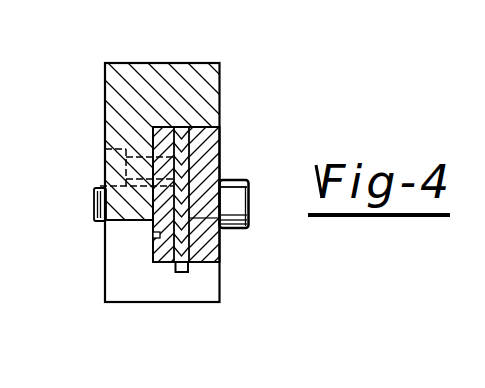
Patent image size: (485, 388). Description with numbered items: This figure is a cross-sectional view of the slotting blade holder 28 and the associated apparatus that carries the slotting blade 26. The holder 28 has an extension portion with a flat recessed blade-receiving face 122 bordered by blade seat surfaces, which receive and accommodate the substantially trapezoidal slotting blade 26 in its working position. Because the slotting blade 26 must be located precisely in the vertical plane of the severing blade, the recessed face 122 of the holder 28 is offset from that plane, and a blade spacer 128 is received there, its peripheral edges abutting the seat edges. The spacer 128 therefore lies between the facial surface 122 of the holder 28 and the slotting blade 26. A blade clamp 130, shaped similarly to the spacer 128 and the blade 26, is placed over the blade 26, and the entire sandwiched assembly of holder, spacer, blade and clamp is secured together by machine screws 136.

The slotting blade holder 28 is at (152, 63).
The slotting blade 26 is at (173, 137).
The recessed blade-receiving face 122 is at (162, 236).
The blade clamp 130 is at (214, 158).
The blade spacer 128 is at (130, 138).
The machine screws 136 is at (233, 228).